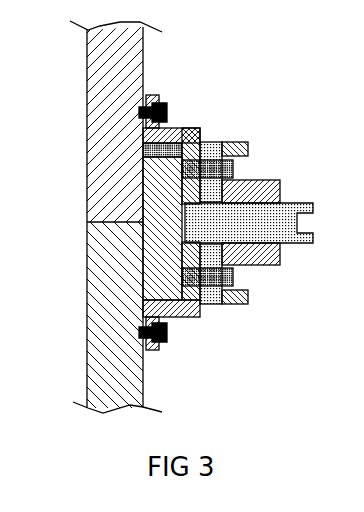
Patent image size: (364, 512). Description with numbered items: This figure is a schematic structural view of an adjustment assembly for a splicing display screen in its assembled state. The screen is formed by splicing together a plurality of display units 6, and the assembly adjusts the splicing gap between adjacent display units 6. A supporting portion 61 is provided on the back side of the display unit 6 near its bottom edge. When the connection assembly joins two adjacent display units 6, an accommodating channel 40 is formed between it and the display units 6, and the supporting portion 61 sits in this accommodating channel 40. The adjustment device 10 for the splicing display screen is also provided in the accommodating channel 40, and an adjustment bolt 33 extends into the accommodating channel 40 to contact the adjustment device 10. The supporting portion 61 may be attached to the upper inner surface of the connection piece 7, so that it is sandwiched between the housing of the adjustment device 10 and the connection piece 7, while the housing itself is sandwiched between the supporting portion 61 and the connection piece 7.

The display unit 6 is at (88, 113).
The adjustment device 10 is at (152, 215).
The supporting portion 61 is at (175, 130).
The connection piece 7 is at (200, 133).
The adjustment bolt 33 is at (272, 218).
The accommodating channel 40 is at (202, 307).